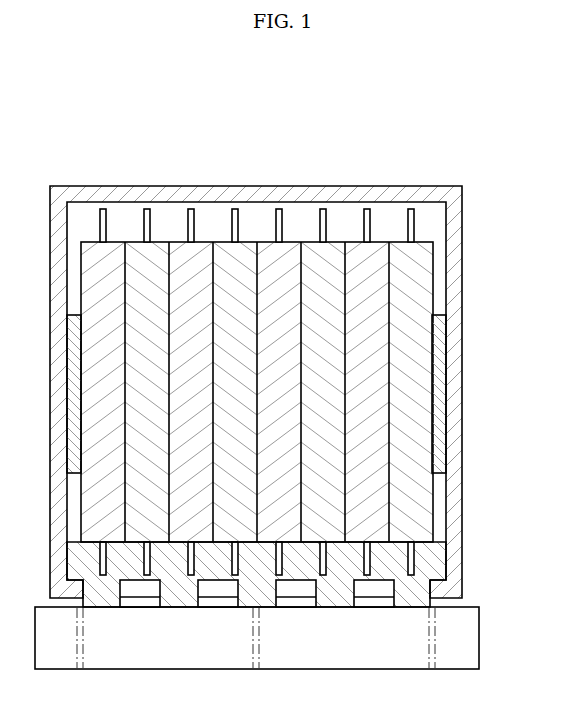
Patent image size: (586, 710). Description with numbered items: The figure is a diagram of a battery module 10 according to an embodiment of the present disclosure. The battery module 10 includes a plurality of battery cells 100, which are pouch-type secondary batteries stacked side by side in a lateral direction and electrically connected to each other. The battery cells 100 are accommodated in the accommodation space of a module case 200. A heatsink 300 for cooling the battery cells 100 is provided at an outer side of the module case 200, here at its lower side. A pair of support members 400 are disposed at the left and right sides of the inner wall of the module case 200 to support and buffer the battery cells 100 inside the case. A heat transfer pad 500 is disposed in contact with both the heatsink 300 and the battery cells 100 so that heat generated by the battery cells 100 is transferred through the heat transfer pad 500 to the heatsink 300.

The battery module 10 is at (59, 134).
The battery cell 100 is at (417, 282).
The module case 200 is at (466, 343).
The heatsink 300 is at (481, 641).
The support member 400 is at (437, 385).
The heat transfer pad 500 is at (440, 562).